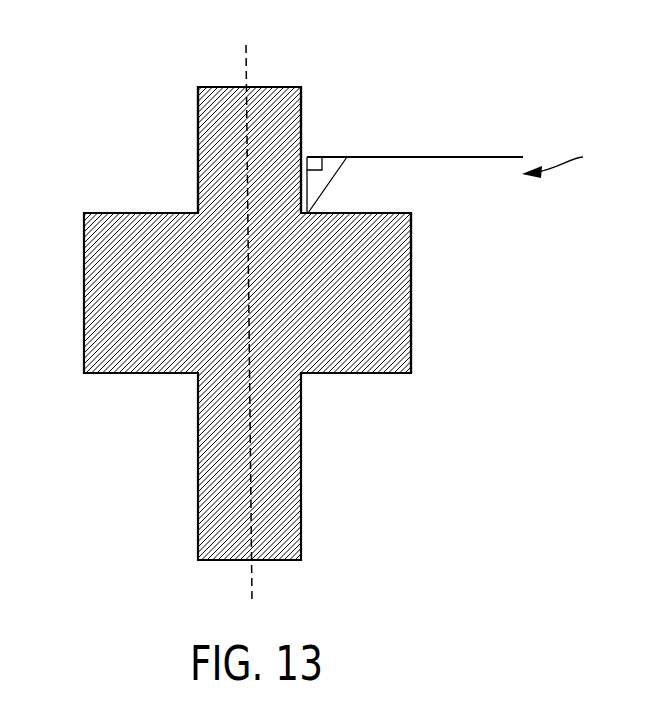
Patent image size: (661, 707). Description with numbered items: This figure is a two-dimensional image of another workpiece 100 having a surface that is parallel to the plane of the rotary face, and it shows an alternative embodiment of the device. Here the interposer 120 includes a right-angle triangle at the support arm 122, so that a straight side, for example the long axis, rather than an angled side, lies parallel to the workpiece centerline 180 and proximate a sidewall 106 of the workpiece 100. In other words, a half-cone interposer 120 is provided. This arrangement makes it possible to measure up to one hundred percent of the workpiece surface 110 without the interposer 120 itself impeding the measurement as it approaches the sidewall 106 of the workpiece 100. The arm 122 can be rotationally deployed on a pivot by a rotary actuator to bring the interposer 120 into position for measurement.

The workpiece 100 is at (85, 335).
The sidewall 106 is at (301, 117).
The workpiece surface 110 is at (400, 213).
The interposer 120 is at (568, 159).
The support arm 122 is at (455, 157).
The workpiece centerline 180 is at (247, 60).